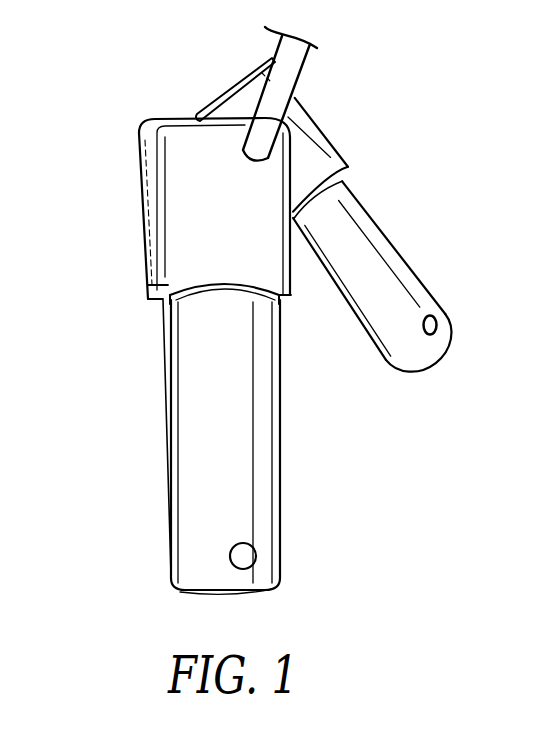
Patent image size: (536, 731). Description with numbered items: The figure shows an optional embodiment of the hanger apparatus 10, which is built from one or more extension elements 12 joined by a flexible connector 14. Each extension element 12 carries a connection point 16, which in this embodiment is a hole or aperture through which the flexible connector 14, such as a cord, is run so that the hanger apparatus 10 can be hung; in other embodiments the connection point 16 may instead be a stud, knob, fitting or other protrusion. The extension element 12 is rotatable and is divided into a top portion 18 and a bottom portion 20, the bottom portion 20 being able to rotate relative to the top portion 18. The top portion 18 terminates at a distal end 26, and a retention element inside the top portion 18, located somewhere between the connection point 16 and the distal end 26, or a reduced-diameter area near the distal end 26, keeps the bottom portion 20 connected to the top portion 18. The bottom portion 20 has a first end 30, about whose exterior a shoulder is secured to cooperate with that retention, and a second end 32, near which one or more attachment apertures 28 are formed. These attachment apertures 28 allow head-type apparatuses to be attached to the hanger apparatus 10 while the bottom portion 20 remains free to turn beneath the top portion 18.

The hanger apparatus 10 is at (87, 108).
The extension element 12 is at (153, 155).
The flexible connector 14 is at (297, 63).
The connection point 16 is at (240, 144).
The top portion 18 is at (177, 212).
The bottom portion 20 is at (197, 413).
The distal end 26 is at (177, 283).
The attachment aperture 28 is at (242, 557).
The first end 30 is at (281, 302).
The second end 32 is at (275, 573).